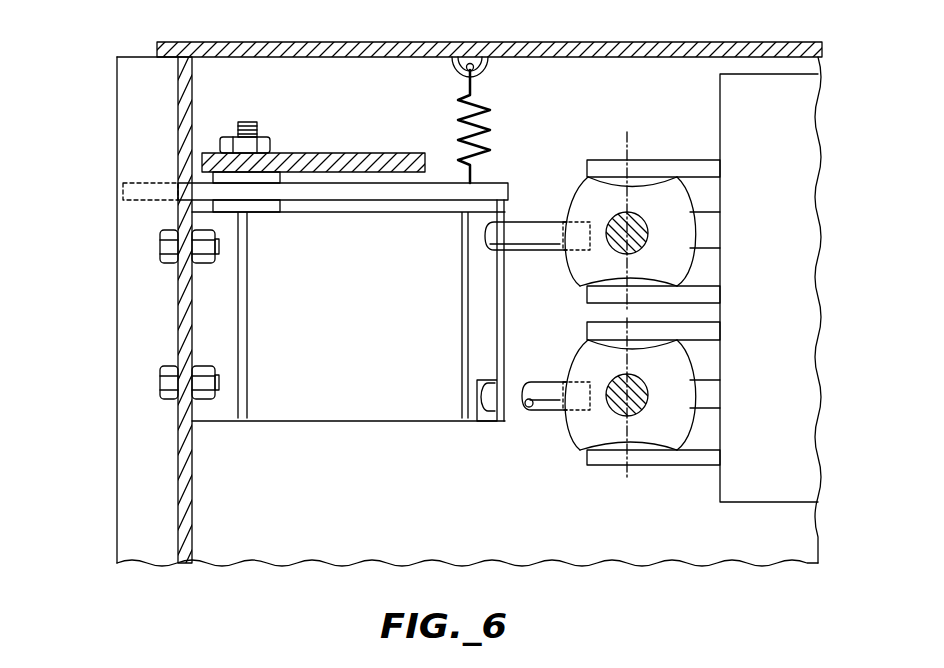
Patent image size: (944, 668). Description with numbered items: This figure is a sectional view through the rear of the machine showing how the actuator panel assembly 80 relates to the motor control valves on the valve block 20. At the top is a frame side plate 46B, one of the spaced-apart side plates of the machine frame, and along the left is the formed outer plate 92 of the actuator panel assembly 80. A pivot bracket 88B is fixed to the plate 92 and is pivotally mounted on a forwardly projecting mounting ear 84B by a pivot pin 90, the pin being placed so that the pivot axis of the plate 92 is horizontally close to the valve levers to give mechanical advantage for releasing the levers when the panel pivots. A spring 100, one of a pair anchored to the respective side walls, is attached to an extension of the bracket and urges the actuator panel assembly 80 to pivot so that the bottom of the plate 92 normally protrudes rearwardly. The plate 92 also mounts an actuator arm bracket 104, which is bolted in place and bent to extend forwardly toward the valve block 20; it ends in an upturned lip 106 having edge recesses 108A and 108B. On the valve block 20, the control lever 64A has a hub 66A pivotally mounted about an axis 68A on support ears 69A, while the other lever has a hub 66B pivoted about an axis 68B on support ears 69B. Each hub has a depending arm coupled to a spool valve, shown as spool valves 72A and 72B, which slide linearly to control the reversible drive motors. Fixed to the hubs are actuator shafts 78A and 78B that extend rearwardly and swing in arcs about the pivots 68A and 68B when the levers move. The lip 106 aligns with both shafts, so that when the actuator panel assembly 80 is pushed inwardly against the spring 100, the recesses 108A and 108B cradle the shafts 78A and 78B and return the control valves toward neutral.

The valve block 20 is at (785, 502).
The frame side plate 46B is at (568, 42).
The control lever 64A is at (645, 388).
The hub 66A is at (583, 432).
The hub 66B is at (583, 200).
The pivot axis 68A is at (625, 472).
The pivot axis 68B is at (623, 147).
The support ears 69A is at (718, 335).
The support ears 69B is at (700, 160).
The spool valve 72A is at (718, 385).
The spool valve 72B is at (716, 235).
The actuator shaft 78A is at (551, 413).
The actuator rod or shaft 78B is at (514, 250).
The actuator panel assembly 80 is at (115, 309).
The mounting ear 84B is at (340, 152).
The pivot bracket 88B is at (330, 196).
The pivot pin 90 is at (248, 121).
The outer plate 92 is at (196, 497).
The spring 100 is at (463, 112).
The actuator arm bracket 104 is at (323, 412).
The upturned lip 106 is at (490, 303).
The edge recess 108A is at (479, 415).
The edge recess 108B is at (490, 250).